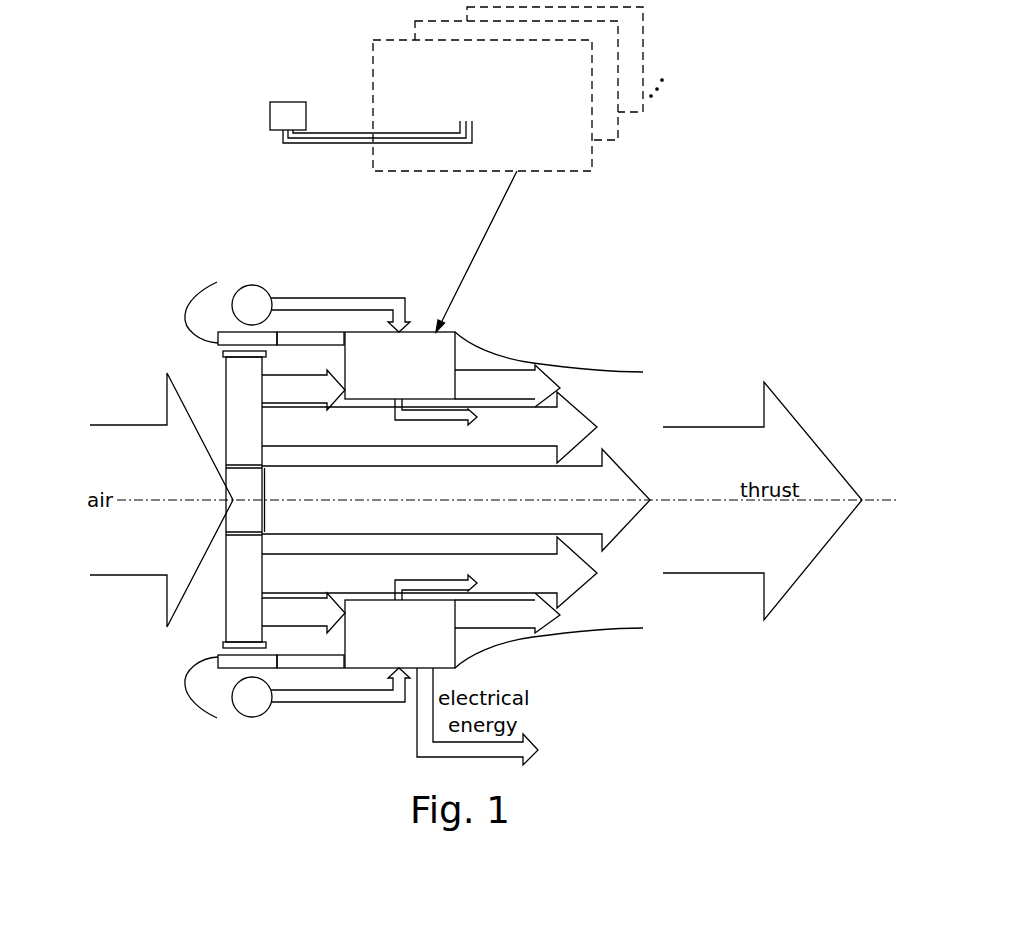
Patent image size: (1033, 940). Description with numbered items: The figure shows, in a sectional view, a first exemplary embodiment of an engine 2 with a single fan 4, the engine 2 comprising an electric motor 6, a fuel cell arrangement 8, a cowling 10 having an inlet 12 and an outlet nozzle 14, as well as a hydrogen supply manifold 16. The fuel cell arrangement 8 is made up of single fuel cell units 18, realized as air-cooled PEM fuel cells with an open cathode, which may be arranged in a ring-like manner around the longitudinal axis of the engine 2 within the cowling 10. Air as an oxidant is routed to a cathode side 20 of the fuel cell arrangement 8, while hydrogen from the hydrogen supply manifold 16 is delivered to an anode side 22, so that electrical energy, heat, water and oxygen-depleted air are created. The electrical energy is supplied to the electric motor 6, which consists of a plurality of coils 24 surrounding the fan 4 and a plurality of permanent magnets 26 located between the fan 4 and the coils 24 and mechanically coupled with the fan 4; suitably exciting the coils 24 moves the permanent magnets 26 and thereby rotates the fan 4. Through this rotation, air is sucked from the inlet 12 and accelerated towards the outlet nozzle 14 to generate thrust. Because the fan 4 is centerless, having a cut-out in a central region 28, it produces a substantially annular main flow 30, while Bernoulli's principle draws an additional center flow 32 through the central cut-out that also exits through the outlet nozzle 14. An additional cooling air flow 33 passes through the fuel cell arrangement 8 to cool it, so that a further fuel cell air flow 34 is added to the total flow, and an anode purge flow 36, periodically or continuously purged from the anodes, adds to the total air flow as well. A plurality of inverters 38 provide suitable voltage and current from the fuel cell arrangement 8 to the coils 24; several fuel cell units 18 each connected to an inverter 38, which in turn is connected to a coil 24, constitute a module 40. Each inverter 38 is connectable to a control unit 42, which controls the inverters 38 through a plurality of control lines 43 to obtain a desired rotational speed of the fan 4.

The engine 2 is at (702, 251).
The fan 4 is at (227, 432).
The electric motor 6 is at (186, 339).
The fuel cell arrangement 8 is at (447, 345).
The cowling 10 is at (212, 288).
The inlet 12 is at (160, 410).
The outlet nozzle 14 is at (632, 368).
The hydrogen supply manifold 16 is at (250, 287).
The fuel cell unit 18 is at (528, 115).
The cathode side 20 is at (343, 322).
The anode side 22 is at (410, 318).
The coil 24 is at (227, 332).
The permanent magnet 26 is at (222, 357).
The central region 28 is at (267, 502).
The main flow 30 is at (570, 412).
The center flow 32 is at (610, 480).
The cooling air flow 33 is at (300, 393).
The fuel cell air flow 34 is at (498, 375).
The anode purge flow 36 is at (478, 414).
The inverter 38 is at (283, 337).
The module 40 is at (575, 171).
The control unit 42 is at (288, 102).
The control line 43 is at (325, 132).